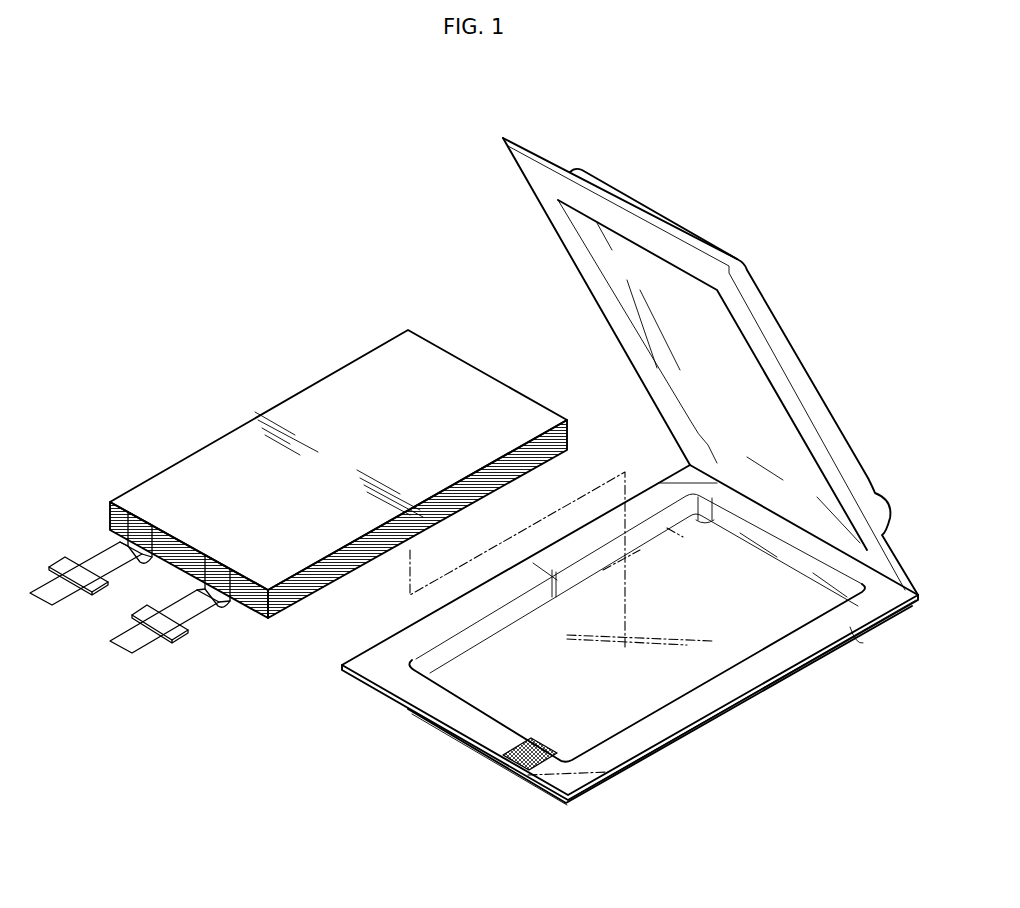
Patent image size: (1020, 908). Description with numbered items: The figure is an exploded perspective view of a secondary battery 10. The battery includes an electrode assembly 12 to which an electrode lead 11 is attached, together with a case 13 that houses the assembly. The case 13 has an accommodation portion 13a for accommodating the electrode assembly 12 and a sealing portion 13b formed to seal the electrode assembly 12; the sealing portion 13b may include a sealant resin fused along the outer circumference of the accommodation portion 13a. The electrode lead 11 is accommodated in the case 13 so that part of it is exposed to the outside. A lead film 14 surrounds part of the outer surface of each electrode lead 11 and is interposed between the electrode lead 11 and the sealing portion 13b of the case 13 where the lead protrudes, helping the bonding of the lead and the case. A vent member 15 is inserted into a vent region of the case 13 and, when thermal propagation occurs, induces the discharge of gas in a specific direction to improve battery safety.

The secondary battery 10 is at (169, 164).
The electrode lead 11 is at (120, 638).
The electrode assembly 12 is at (328, 383).
The case 13 is at (870, 461).
The accommodation portion 13a is at (748, 617).
The sealing portion 13b is at (825, 633).
The lead film 14 is at (58, 562).
The vent member 15 is at (515, 760).